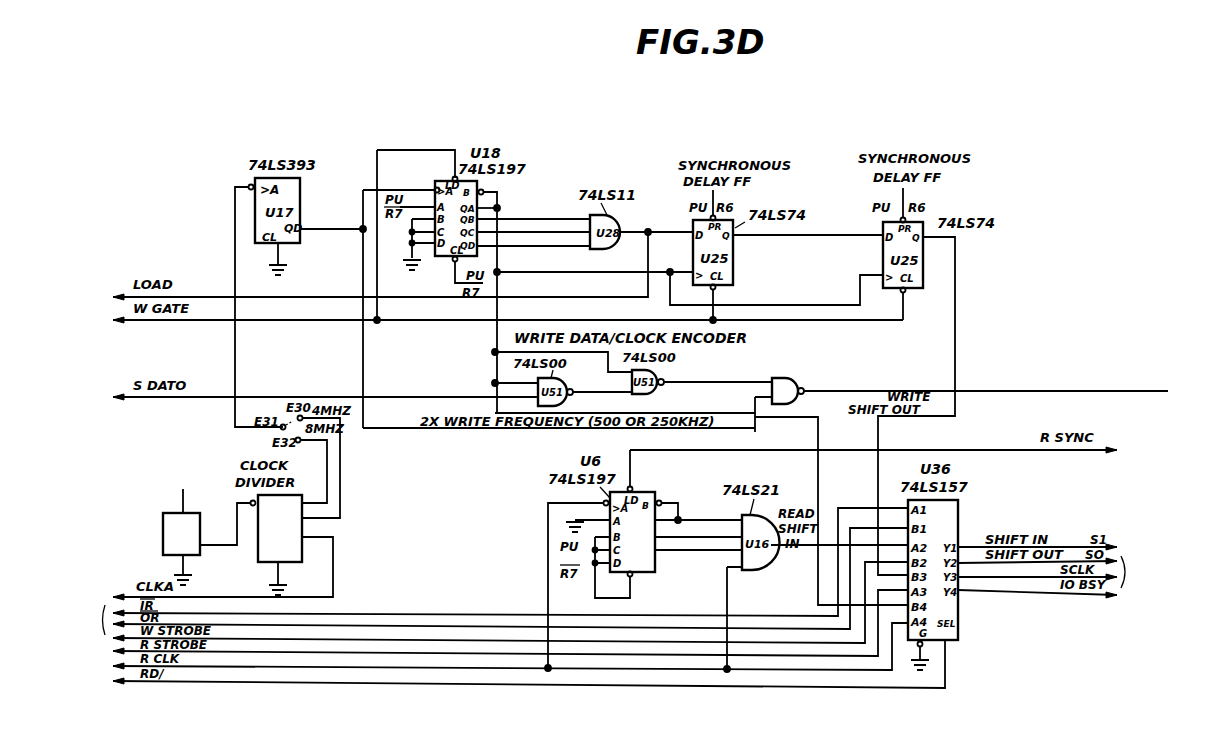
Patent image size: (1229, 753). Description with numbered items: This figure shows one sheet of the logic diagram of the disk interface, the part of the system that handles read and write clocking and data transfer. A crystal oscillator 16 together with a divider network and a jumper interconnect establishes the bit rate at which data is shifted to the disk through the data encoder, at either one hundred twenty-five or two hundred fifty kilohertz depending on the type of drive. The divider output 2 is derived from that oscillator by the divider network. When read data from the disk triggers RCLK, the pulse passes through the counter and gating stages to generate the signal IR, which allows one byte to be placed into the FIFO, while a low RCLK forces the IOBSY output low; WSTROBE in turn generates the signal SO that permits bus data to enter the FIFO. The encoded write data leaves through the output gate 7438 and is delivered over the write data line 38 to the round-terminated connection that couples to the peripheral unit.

The write data connector J1 38 is at (1153, 387).
The NAND gate U41 7438 is at (783, 378).
The 16 MHz oscillator U7 16 is at (209, 528).
The 2 MHz clock divider output U17 2 is at (223, 550).